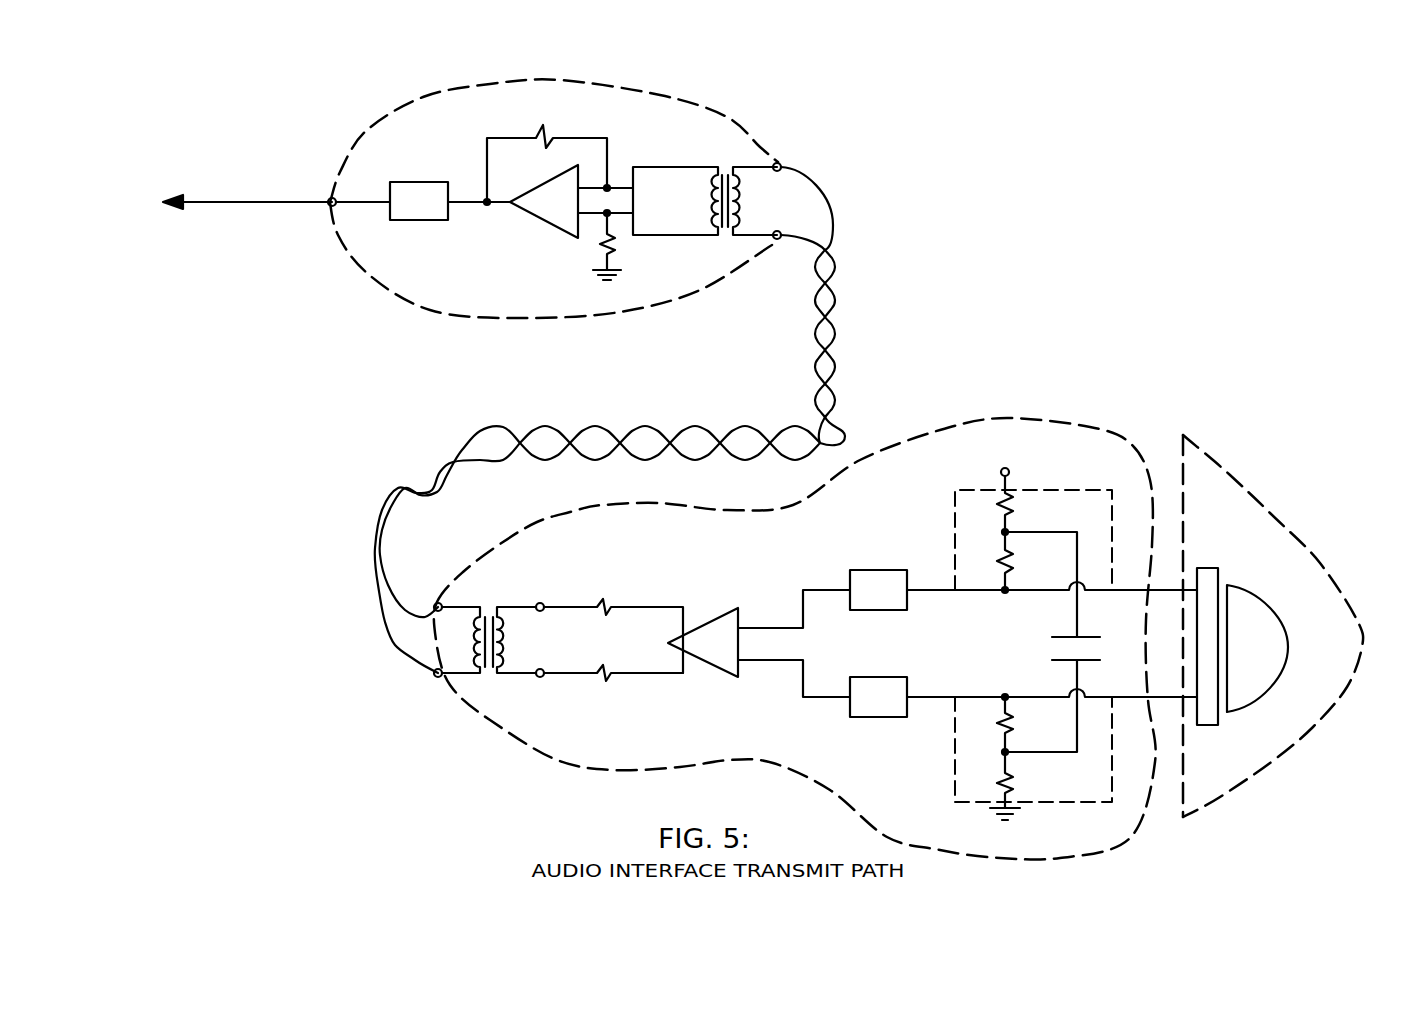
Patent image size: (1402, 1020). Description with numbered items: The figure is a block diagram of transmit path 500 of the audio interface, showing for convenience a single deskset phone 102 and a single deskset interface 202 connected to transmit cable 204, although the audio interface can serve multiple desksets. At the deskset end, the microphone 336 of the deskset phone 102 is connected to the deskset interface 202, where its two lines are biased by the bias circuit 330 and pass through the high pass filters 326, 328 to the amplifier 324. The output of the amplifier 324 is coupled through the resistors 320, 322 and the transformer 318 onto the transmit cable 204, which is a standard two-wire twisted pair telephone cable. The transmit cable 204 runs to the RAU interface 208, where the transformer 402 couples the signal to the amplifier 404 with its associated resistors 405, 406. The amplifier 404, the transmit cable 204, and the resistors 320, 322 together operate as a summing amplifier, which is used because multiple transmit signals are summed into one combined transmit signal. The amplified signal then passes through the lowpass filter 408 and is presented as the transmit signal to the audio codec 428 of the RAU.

The transmit path 500 is at (162, 132).
The audio codec 428 is at (206, 294).
The RAU interface 208 is at (655, 100).
The lowpass filter 408 is at (418, 182).
The resistor 406 is at (541, 128).
The amplifier 404 is at (556, 232).
The resistor 405 is at (610, 256).
The transformer 402 is at (725, 170).
The transmit cable 204 is at (841, 256).
The deskset interface 202 is at (1032, 418).
The transformer 318 is at (488, 608).
The resistor 320 is at (605, 604).
The resistor 322 is at (605, 678).
The amplifier 324 is at (738, 610).
The high pass filter 326 is at (883, 570).
The high pass filter 328 is at (883, 717).
The bias circuit 330 is at (962, 490).
The microphone 336 is at (1205, 568).
The deskset phone 102 is at (1247, 475).